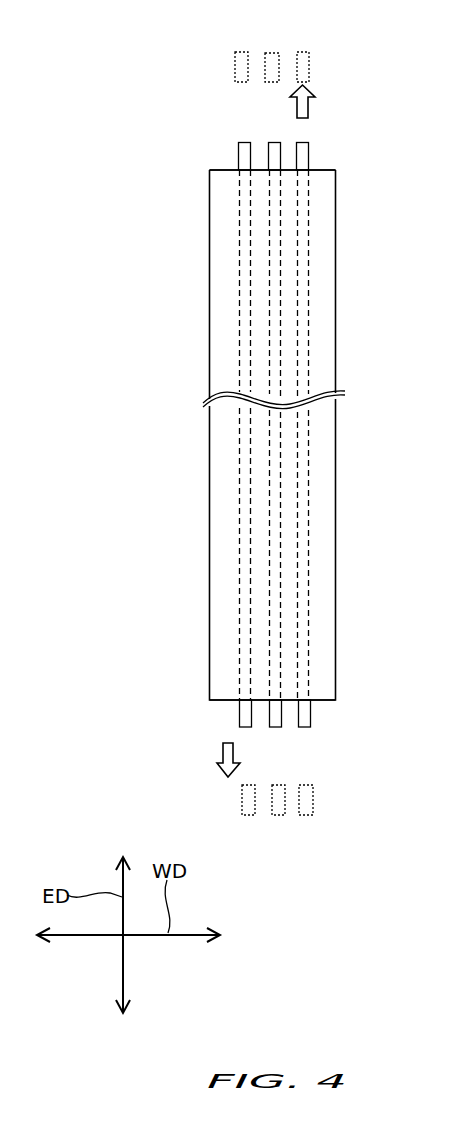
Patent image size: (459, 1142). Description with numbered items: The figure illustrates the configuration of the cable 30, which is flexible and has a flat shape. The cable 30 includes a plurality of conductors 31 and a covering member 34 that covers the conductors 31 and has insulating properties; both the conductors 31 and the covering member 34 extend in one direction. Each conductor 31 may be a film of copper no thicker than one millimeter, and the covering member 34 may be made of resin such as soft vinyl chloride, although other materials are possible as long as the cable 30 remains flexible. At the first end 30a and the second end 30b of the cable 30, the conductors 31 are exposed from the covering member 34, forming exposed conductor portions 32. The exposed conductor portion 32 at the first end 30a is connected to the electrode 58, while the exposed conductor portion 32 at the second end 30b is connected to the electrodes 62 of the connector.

The cable 30 is at (263, 404).
The first end 30a is at (220, 155).
The second end 30b is at (223, 718).
The conductor 31 is at (310, 468).
The exposed conductor portion 32 is at (302, 143).
The covering member 34 is at (323, 292).
The electrode 58 is at (300, 53).
The electrodes 62 is at (248, 815).